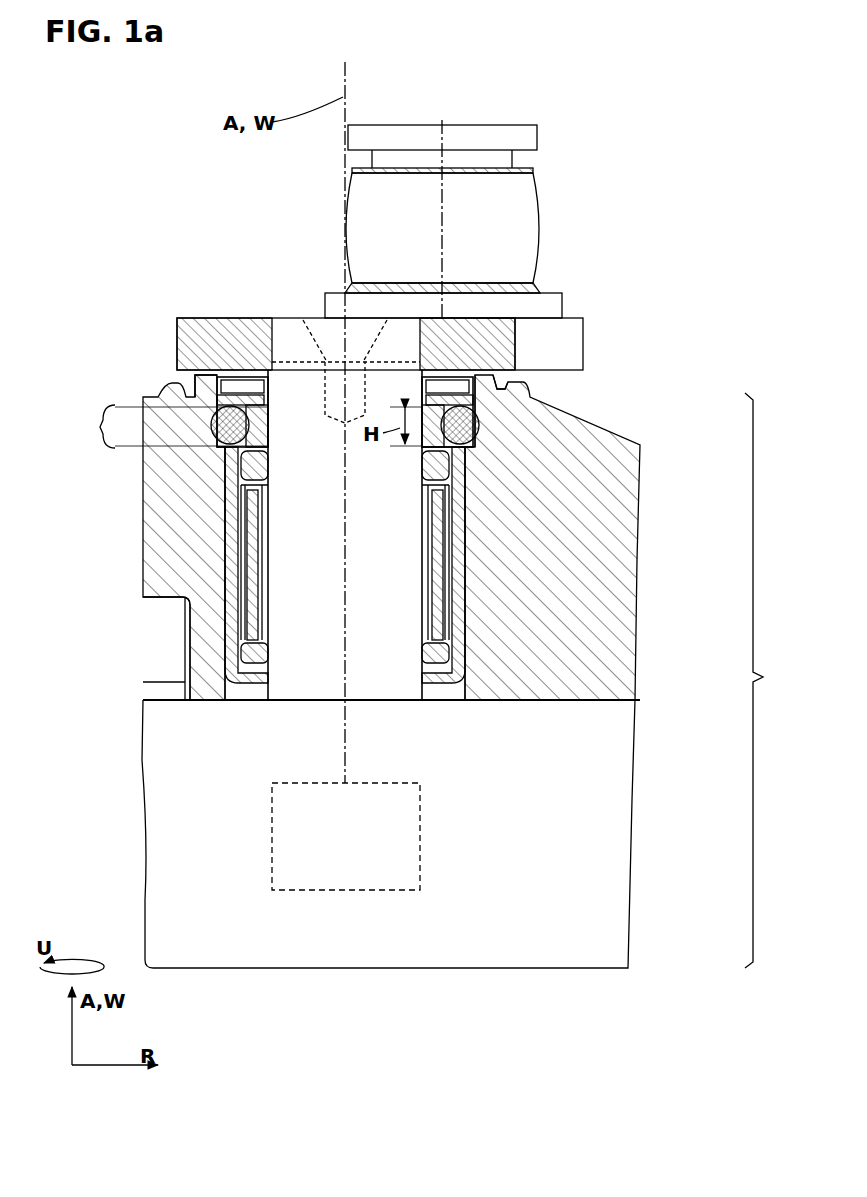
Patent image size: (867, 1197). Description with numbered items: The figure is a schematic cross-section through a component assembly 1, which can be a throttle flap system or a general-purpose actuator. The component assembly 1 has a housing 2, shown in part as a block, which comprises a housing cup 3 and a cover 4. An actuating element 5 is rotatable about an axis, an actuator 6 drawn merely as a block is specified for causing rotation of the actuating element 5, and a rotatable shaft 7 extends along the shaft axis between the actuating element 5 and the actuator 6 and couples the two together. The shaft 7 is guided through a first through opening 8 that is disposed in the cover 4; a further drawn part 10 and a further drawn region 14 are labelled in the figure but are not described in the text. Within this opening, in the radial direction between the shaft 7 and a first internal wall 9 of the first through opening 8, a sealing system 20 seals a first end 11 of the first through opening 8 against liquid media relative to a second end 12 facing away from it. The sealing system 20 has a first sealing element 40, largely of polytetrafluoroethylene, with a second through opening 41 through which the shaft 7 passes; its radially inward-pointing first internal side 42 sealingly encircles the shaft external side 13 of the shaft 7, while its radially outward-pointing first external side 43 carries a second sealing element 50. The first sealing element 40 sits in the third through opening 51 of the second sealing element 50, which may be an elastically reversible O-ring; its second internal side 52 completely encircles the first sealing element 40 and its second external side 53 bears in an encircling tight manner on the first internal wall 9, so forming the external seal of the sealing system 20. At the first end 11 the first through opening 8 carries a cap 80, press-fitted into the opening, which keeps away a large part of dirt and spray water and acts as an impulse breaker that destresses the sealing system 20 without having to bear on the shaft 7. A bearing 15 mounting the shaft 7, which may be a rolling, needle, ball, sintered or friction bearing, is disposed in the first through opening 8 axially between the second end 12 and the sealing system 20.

The component assembly 1 is at (128, 207).
The housing 2 is at (764, 680).
The housing cup 3 is at (620, 890).
The cover 4 is at (597, 572).
The actuating element 5 is at (545, 178).
The actuator 6 is at (283, 844).
The shaft 7 is at (283, 657).
The first through opening 8 is at (480, 412).
The first internal wall 9 is at (222, 398).
The cover plate 10 is at (565, 340).
The first end 11 is at (228, 372).
The second end 12 is at (243, 707).
The shaft external side 13 is at (267, 555).
The bearing seat 14 is at (466, 456).
The bearing 15 is at (240, 528).
The sealing system 20 is at (170, 426).
The first sealing element 40 is at (255, 437).
The second through opening 41 is at (274, 405).
The first internal side 42 is at (270, 427).
The first external side 43 is at (240, 420).
The second sealing element 50 is at (480, 440).
The third through opening 51 is at (447, 423).
The second internal side 52 is at (448, 415).
The second external side 53 is at (498, 412).
The cap 80 is at (505, 397).